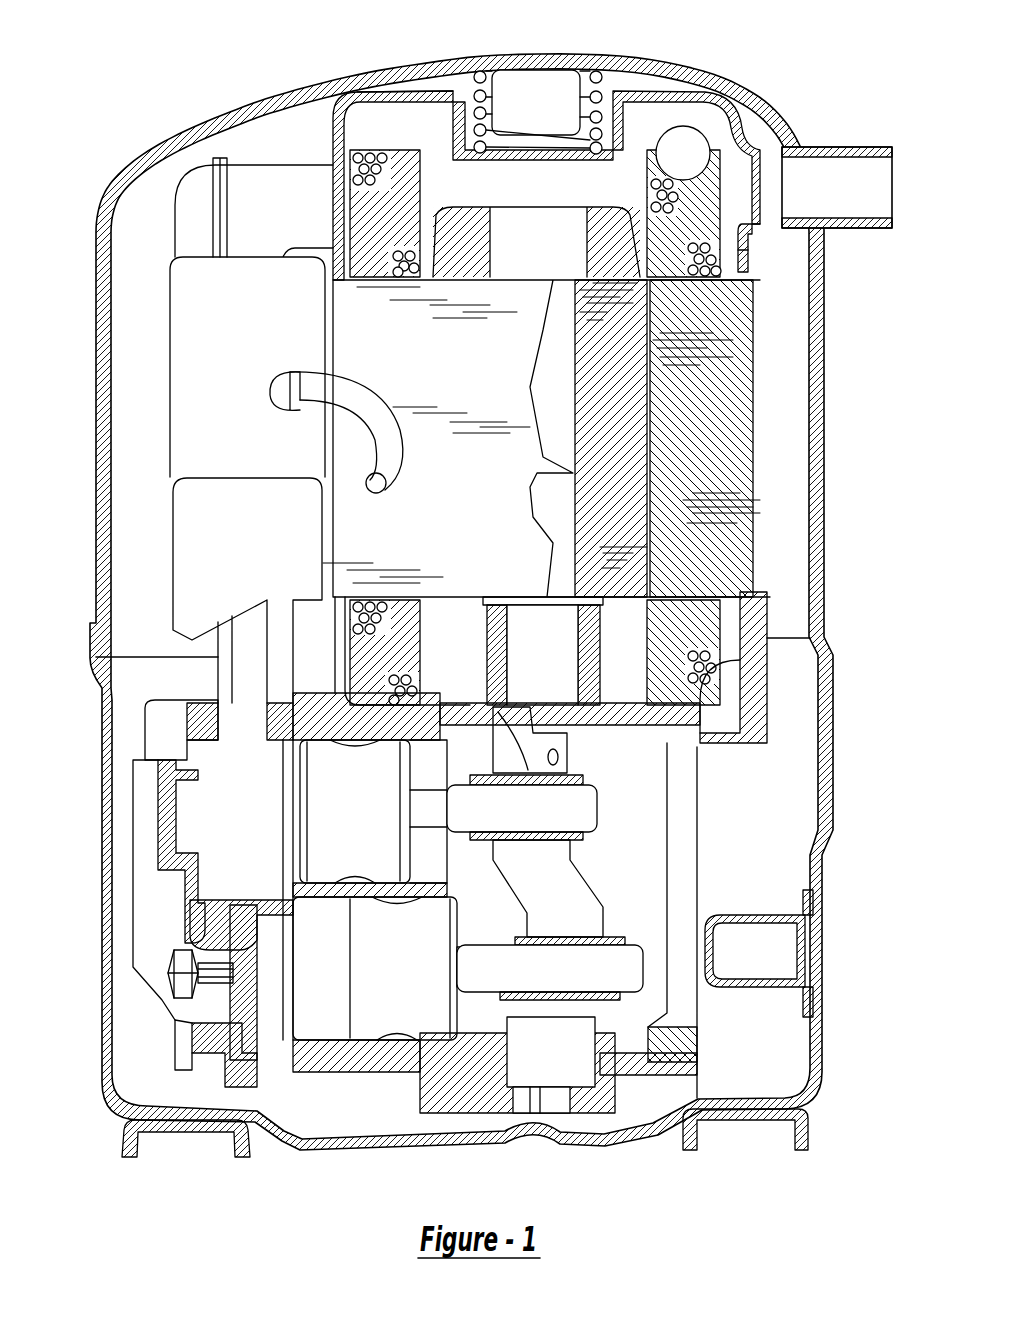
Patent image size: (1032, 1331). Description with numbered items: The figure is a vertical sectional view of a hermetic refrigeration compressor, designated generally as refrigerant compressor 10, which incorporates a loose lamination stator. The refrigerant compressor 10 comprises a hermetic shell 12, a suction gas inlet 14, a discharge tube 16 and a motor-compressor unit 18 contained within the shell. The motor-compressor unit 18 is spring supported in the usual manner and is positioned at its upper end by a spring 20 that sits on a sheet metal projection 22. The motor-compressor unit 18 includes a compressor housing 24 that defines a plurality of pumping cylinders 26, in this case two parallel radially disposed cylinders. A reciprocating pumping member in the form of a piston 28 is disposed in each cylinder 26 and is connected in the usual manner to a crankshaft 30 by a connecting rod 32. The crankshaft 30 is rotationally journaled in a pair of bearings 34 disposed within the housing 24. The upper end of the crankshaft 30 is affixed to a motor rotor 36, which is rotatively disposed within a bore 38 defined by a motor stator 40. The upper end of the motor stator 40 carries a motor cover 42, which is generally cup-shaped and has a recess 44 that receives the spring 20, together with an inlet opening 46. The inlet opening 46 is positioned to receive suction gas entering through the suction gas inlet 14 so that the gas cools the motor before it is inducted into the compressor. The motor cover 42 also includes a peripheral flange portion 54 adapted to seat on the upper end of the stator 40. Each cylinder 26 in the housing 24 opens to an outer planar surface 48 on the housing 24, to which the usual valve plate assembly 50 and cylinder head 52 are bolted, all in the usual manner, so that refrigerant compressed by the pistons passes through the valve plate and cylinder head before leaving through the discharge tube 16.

The refrigerant compressor 10 is at (790, 66).
The hermetic shell 12 is at (827, 767).
The suction gas inlet 14 is at (873, 145).
The discharge tube 16 is at (388, 447).
The motor-compressor unit 18 is at (635, 850).
The spring 20 is at (626, 93).
The sheet metal projection 22 is at (546, 112).
The compressor housing 24 is at (763, 687).
The pumping cylinders 26 is at (427, 770).
The piston 28 is at (358, 826).
The crankshaft 30 is at (553, 901).
The connecting rod 32 is at (551, 829).
The bearings 34 is at (505, 648).
The motor rotor 36 is at (620, 418).
The bore 38 is at (760, 445).
The motor stator 40 is at (718, 512).
The motor cover 42 is at (745, 147).
The recess 44 is at (463, 123).
The inlet opening 46 is at (753, 210).
The outer planar surface 48 is at (215, 1063).
The valve plate assembly 50 is at (282, 827).
The cylinder head 52 is at (170, 770).
The peripheral flange portion 54 is at (748, 265).